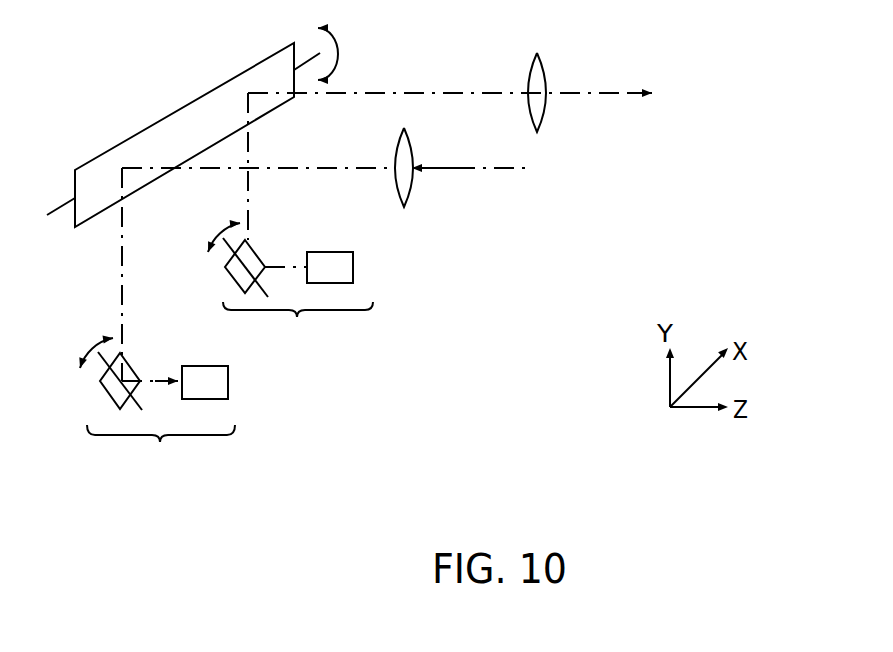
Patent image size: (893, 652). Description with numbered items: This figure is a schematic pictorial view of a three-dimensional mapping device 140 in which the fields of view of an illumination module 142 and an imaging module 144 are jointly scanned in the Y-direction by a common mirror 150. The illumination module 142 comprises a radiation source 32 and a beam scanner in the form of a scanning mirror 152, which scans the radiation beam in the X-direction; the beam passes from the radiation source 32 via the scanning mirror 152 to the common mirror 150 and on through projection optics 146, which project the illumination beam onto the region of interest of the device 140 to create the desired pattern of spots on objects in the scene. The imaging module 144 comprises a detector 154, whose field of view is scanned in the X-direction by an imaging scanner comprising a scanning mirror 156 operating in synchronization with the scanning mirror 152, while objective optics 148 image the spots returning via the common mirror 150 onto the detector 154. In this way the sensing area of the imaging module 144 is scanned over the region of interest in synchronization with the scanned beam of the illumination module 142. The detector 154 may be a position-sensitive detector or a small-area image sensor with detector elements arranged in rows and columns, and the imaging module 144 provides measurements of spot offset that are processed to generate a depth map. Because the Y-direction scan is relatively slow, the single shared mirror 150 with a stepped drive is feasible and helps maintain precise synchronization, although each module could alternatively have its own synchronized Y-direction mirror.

The 3D mapping device 140 is at (125, 97).
The common mirror 150 is at (187, 97).
The projection optics 146 is at (543, 62).
The objective optics 148 is at (408, 133).
The illumination module 142 is at (312, 277).
The scanning mirror 152 is at (295, 227).
The radiation source 32 is at (353, 265).
The imaging module 144 is at (192, 397).
The scanning mirror 156 is at (132, 355).
The detector 154 is at (228, 381).